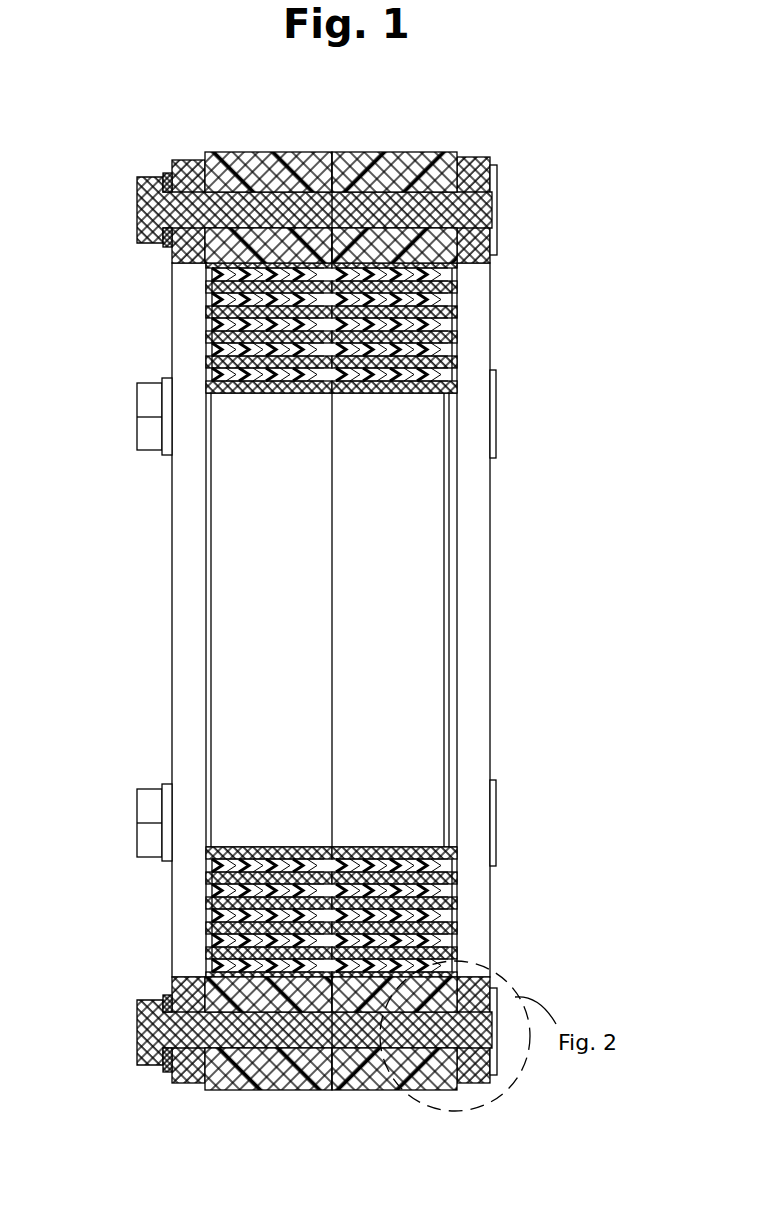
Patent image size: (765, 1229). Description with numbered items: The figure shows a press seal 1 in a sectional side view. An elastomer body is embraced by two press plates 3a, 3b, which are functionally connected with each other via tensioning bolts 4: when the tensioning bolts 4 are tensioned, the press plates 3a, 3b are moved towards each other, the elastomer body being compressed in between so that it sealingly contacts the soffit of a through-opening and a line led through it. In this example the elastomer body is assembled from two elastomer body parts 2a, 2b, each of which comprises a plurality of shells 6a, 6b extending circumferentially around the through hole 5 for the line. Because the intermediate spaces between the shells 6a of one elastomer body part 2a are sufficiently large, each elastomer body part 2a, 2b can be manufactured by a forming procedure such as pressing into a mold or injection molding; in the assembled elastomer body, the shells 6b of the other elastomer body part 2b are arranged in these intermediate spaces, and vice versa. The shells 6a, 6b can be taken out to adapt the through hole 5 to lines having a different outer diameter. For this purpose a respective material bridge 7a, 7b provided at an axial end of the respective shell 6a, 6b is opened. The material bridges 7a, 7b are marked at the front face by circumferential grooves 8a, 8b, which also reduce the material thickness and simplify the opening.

The press seal 1 is at (82, 990).
The elastomer body part 2a is at (404, 153).
The elastomer body part 2b is at (282, 164).
The press plate 3a is at (480, 303).
The press plate 3b is at (185, 365).
The tensioning bolt 4 is at (264, 198).
The through hole 5 is at (400, 752).
The shell 6a is at (400, 393).
The shell 6b is at (257, 393).
The material bridge 7a is at (458, 881).
The material bridge 7b is at (207, 867).
The circumferential groove 8a is at (462, 874).
The circumferential groove 8b is at (200, 920).